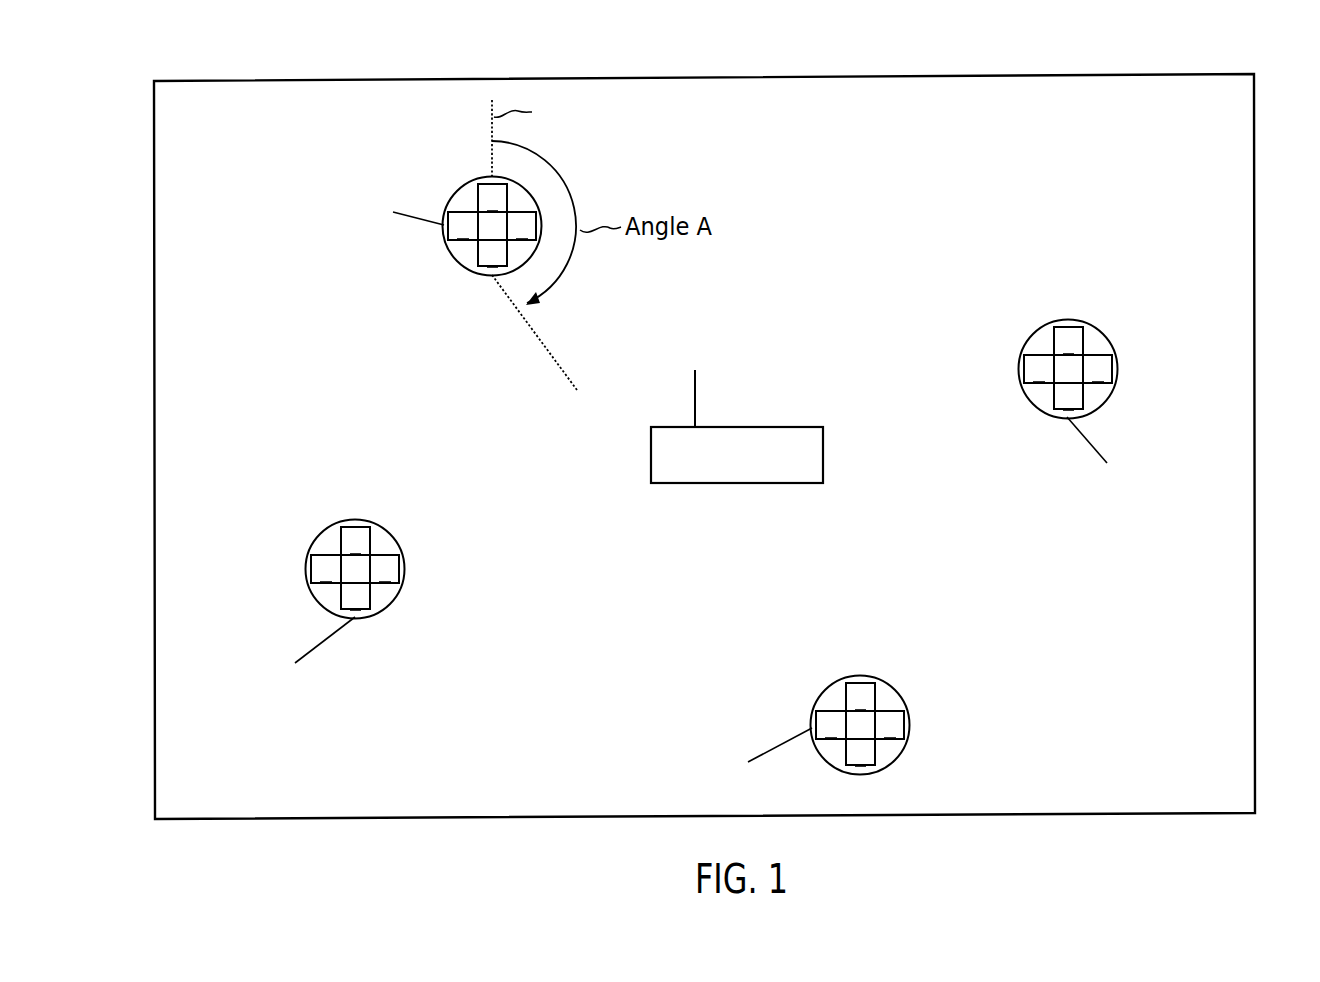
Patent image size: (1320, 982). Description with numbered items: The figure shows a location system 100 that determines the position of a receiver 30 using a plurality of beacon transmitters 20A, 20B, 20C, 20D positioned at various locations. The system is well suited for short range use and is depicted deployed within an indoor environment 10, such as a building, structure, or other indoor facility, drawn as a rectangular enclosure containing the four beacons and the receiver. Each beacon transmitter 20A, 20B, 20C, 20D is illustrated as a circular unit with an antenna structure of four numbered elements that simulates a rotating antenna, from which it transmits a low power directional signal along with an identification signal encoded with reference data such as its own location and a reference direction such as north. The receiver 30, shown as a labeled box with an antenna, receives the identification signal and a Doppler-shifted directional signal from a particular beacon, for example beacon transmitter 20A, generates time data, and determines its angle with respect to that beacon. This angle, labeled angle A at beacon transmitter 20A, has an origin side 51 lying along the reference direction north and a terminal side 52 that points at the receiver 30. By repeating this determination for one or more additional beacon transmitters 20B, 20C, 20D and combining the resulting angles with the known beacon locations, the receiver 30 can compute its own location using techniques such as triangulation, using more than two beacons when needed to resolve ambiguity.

The location system 100 is at (1197, 55).
The indoor environment 10 is at (1254, 233).
The beacon transmitter 20A is at (446, 254).
The beacon transmitter 20B is at (405, 572).
The beacon transmitter 20C is at (1088, 325).
The beacon transmitter 20D is at (912, 710).
The receiver 30 is at (823, 452).
The origin side 51 is at (491, 133).
The terminal side 52 is at (553, 363).